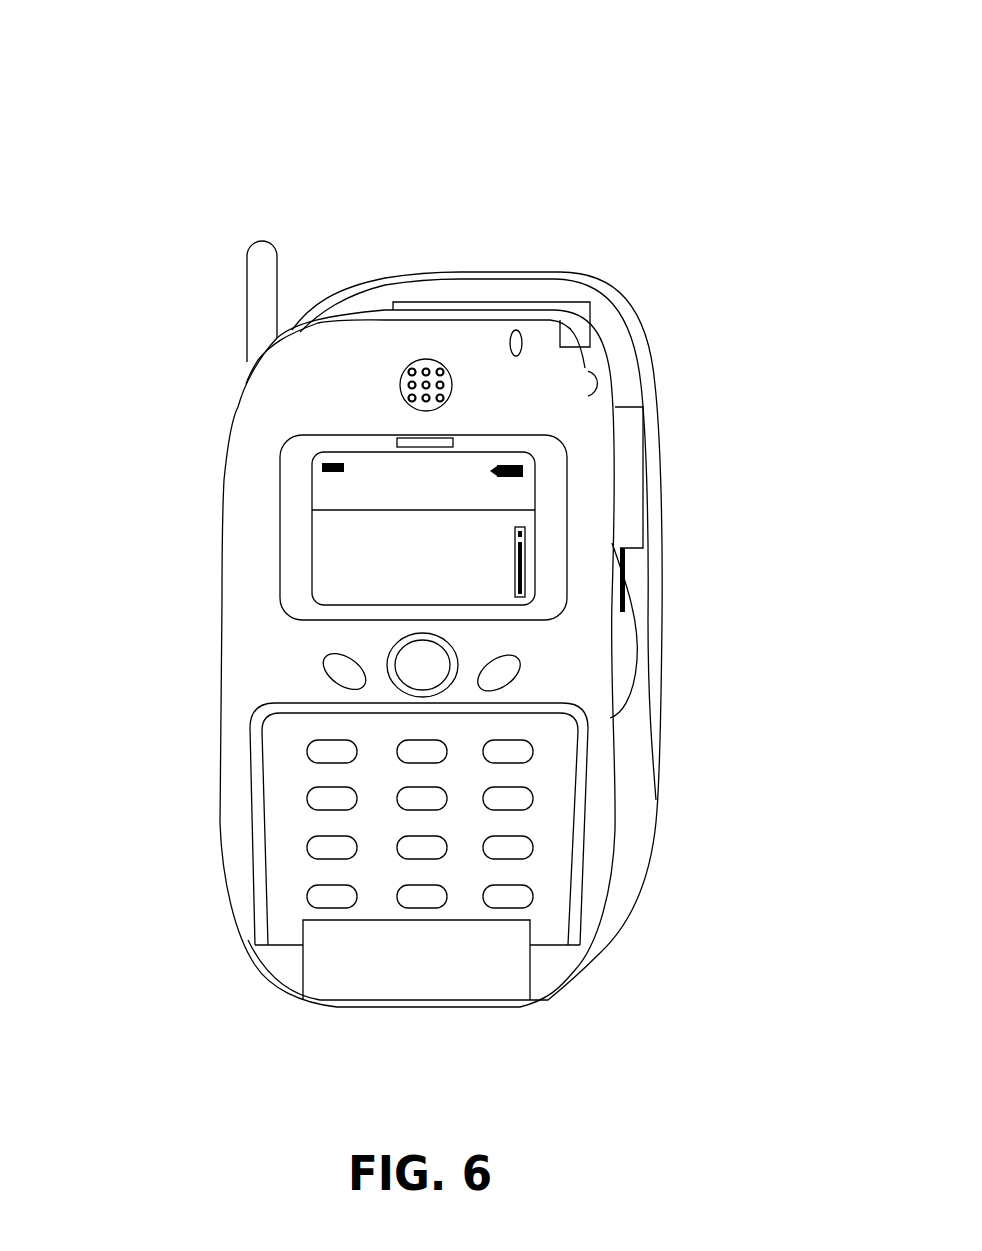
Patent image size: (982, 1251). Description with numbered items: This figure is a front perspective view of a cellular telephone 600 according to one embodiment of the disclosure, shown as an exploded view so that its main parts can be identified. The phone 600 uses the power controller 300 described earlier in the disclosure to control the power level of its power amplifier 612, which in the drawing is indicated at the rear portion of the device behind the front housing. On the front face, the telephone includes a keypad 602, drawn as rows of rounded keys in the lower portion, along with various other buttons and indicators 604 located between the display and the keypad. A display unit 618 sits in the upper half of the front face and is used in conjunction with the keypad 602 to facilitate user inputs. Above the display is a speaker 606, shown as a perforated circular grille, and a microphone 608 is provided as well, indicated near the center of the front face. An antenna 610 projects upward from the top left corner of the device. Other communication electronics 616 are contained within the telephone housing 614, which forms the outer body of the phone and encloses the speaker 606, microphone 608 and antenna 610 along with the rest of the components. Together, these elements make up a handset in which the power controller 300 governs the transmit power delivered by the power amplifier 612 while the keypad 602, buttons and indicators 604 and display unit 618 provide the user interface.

The cellular telephone 600 is at (761, 50).
The keypad 602 is at (563, 823).
The buttons and indicators 604 is at (499, 667).
The speaker 606 is at (401, 383).
The microphone 608 is at (422, 665).
The antenna 610 is at (267, 240).
The power amplifier 612 is at (657, 407).
The telephone housing 614 is at (247, 637).
The communication electronics 616 is at (557, 303).
The display unit 618 is at (312, 486).
The power controller 300 is at (630, 650).